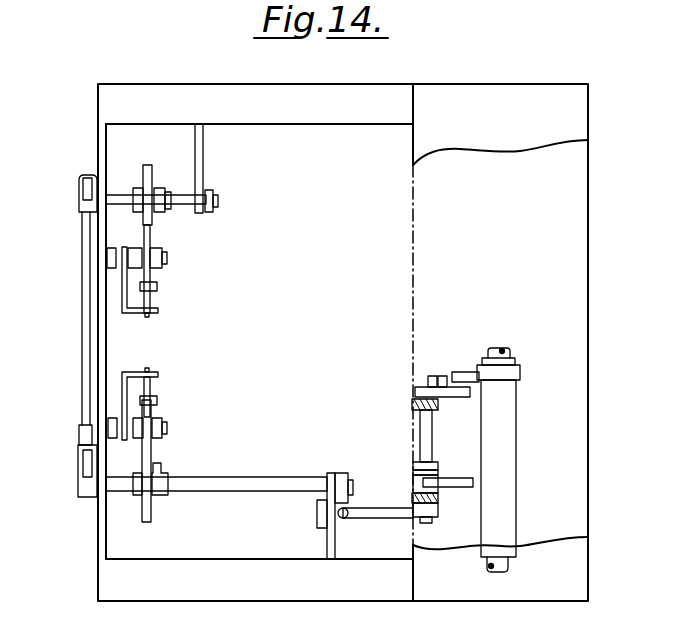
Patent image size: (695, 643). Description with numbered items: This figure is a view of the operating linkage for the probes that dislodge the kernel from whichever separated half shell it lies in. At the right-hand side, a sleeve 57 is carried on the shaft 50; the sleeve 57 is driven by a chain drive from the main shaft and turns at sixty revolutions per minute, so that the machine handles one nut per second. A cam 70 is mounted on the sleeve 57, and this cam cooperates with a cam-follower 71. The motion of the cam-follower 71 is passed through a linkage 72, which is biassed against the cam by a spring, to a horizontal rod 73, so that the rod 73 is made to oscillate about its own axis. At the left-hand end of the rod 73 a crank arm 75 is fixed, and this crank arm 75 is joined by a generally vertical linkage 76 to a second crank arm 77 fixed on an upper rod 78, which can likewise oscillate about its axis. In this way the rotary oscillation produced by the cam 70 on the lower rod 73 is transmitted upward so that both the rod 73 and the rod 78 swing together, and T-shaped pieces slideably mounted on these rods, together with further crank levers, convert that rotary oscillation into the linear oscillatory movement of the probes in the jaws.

The shaft 50 is at (504, 351).
The sleeve 57 is at (502, 457).
The cam 70 is at (522, 377).
The cam-follower 71 is at (462, 372).
The linkage 72 is at (424, 430).
The rod 73 is at (231, 484).
The crank arm 75 is at (78, 475).
The linkage 76 is at (85, 343).
The second crank arm 77 is at (78, 195).
The rod 78 is at (180, 200).